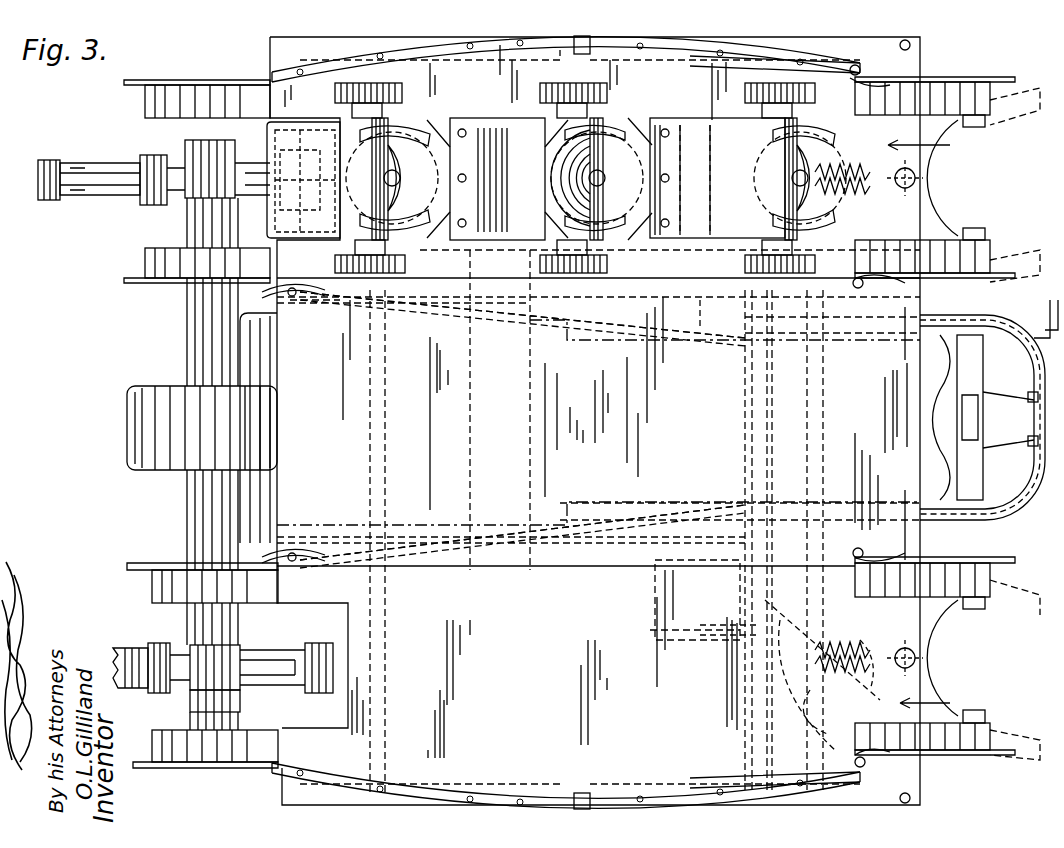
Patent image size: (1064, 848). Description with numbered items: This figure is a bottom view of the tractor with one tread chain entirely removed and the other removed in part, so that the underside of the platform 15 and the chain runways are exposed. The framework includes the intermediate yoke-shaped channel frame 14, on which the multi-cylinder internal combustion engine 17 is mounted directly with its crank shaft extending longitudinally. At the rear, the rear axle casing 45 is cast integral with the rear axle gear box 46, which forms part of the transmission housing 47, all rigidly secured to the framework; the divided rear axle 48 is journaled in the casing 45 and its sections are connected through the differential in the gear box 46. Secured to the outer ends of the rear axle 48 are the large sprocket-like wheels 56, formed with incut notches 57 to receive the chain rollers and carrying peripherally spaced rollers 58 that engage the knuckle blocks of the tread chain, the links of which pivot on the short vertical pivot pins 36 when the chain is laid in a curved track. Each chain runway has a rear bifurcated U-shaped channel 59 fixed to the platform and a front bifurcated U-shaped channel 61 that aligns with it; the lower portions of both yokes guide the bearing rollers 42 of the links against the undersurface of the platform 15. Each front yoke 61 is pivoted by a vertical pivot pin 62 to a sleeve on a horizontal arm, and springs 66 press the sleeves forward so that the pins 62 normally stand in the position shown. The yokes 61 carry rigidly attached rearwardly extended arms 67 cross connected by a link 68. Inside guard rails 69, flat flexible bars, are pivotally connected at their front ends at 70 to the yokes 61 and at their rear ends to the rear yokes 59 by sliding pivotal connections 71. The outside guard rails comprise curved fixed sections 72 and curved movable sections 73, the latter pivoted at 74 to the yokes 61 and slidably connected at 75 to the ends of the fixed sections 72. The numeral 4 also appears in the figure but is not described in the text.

The section line arrow 4 is at (926, 430).
The intermediate yoke-shaped channel frame 14 is at (989, 416).
The platform 15 is at (653, 421).
The multi-cylinder internal combustion engine 17 is at (930, 388).
The vertical pivot pin 36 is at (400, 178).
The bearing rollers 42 is at (403, 92).
The rear axle casing 45 is at (200, 525).
The rear axle gear box 46 is at (130, 455).
The transmission housing 47 is at (265, 490).
The divided rear axle 48 is at (210, 705).
The sprocket-like wheels 56 is at (112, 186).
The incut notches 57 is at (55, 165).
The peripherally spaced rollers 58 is at (148, 158).
The bifurcated U-shaped channel 59 is at (145, 100).
The bifurcated U-shaped channel 61 is at (965, 80).
The vertical pivot pin 62 is at (915, 178).
The spring 66 is at (860, 680).
The rearwardly extended arm 67 is at (790, 648).
The link 68 is at (777, 451).
The inside guard rail 69 is at (745, 285).
The pivotal connection 70 is at (860, 288).
The sliding pivotal connection 71 is at (293, 300).
The curved fixed section 72 is at (440, 64).
The curved movable section 73 is at (705, 58).
The pivotal connection 74 is at (856, 64).
The slidable connection 75 is at (592, 45).